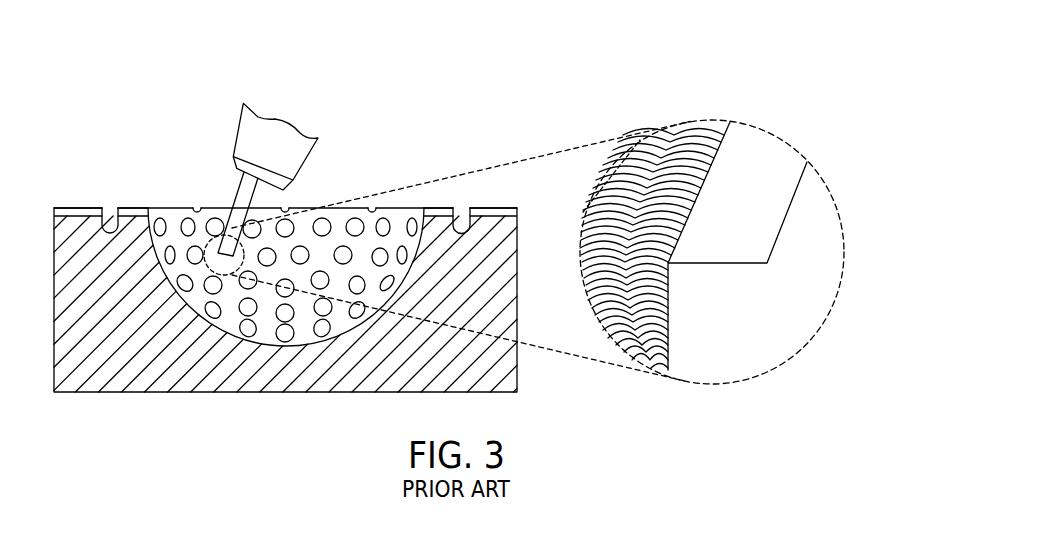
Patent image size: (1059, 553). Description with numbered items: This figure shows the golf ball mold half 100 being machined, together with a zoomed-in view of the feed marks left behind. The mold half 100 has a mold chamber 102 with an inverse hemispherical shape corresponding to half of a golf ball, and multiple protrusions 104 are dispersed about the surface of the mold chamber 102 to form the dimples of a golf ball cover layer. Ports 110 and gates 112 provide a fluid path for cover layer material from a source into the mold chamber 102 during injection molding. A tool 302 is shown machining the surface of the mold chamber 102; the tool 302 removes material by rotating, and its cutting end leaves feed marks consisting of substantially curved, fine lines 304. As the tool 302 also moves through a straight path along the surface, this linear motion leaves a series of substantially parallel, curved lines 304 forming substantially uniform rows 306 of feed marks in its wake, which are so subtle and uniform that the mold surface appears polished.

The golf ball mold half 100 is at (127, 408).
The mold chamber 102 is at (227, 322).
The protrusions 104 is at (287, 336).
The ports 110 is at (83, 208).
The gates 112 is at (136, 208).
The tool 302 is at (232, 222).
The curved, fine lines 304 is at (682, 130).
The rows of feed marks 306 is at (703, 135).